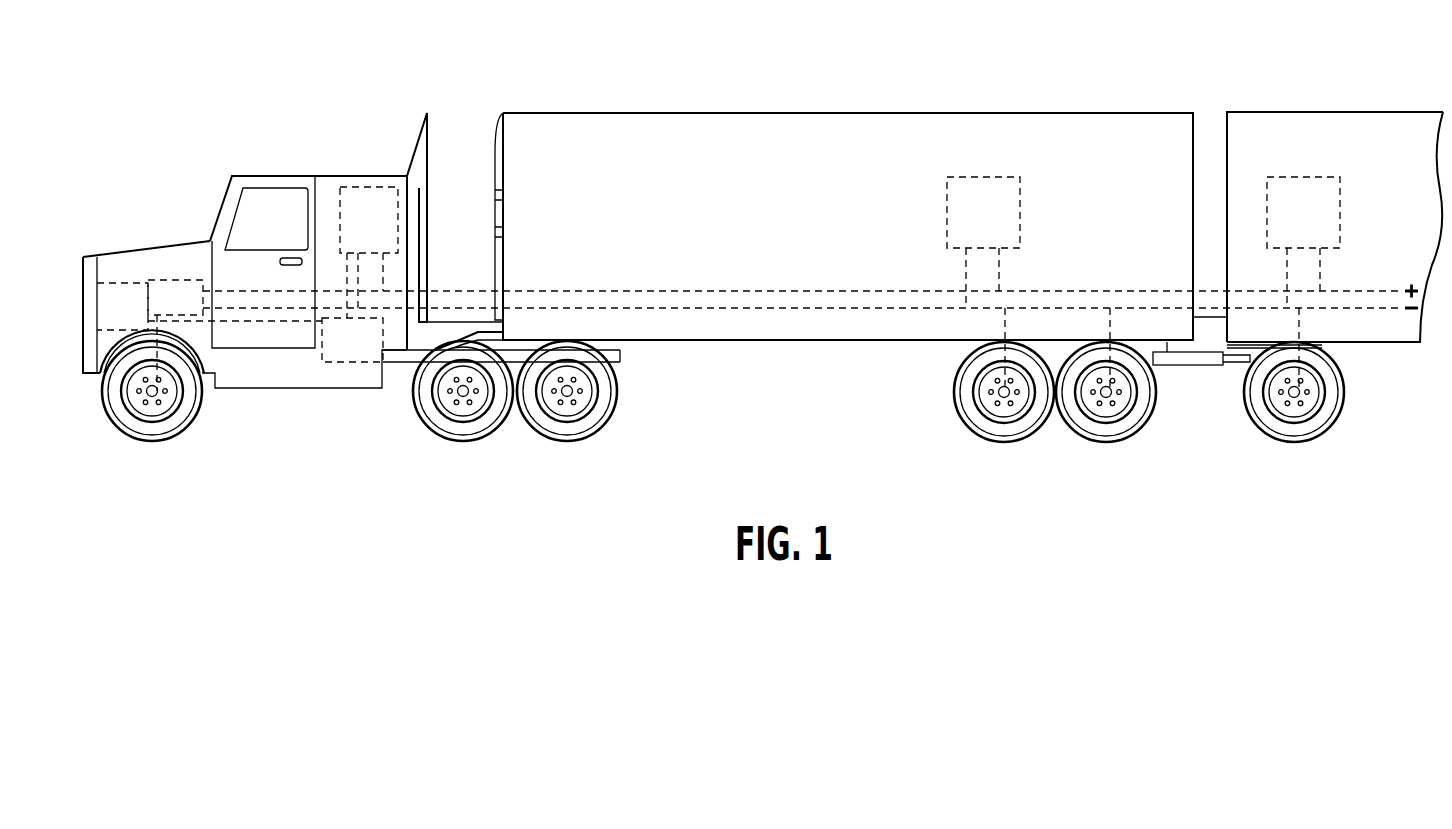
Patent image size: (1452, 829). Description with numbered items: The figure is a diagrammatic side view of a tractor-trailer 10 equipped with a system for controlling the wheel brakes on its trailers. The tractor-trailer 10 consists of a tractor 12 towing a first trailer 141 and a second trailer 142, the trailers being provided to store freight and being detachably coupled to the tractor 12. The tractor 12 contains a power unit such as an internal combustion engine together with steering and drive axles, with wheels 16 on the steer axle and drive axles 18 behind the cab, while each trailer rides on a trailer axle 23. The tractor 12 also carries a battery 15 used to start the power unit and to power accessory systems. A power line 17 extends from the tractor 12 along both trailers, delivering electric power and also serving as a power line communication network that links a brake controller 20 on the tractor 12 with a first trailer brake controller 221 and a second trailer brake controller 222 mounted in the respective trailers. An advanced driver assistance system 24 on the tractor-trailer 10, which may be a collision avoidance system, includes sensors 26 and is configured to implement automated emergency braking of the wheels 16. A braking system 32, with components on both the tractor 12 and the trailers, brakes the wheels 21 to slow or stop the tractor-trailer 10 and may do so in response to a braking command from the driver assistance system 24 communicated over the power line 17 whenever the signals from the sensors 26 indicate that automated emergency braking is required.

The tractor-trailer 10 is at (200, 141).
The tractor 12 is at (116, 265).
The first trailer 141 is at (624, 130).
The second trailer 142 is at (1257, 117).
The battery 15 is at (166, 272).
The wheels 16 is at (135, 445).
The power line 17 is at (770, 292).
The drive axles 18 is at (512, 441).
The brake controller 20 is at (368, 193).
The wheels 21 is at (173, 422).
The first trailer brake controller 221 is at (980, 183).
The second trailer brake controller 222 is at (1327, 183).
The trailer axle 23 is at (1053, 437).
The advanced driver assistance system 24 is at (415, 173).
The sensors 26 is at (108, 316).
The braking system 32 is at (340, 351).